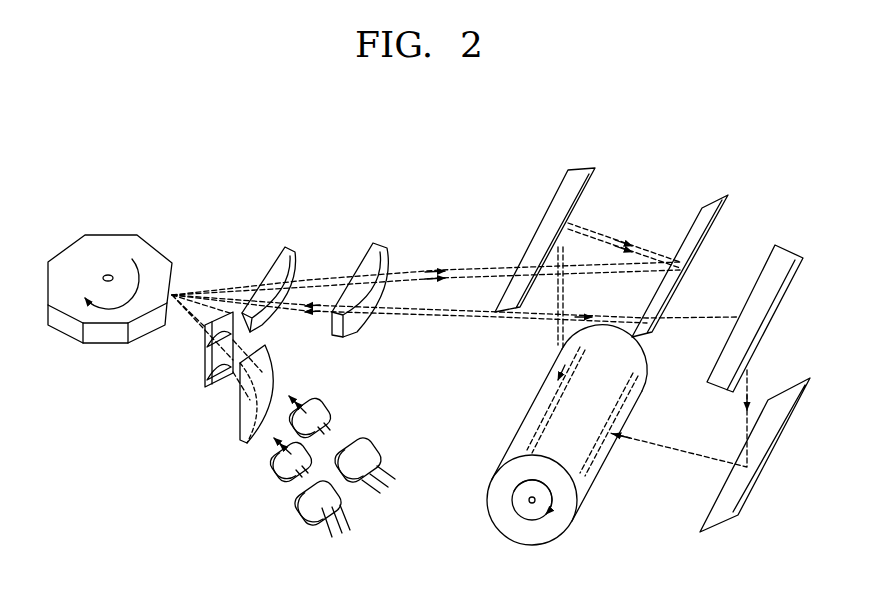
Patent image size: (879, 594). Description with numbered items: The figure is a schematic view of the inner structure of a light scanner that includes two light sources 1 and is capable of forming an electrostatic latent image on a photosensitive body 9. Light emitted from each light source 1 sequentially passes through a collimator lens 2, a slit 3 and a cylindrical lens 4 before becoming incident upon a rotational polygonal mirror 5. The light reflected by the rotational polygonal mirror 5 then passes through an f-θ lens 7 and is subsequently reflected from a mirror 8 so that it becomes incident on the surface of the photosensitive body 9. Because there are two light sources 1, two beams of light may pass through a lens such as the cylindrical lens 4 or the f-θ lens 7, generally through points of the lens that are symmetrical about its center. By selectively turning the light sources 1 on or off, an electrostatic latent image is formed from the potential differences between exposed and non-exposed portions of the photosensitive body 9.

The light source 1 is at (360, 483).
The collimator lens 2 is at (343, 448).
The slit 3 is at (202, 394).
The cylindrical lens 4 is at (236, 448).
The rotational polygonal mirror 5 is at (118, 242).
The f-θ lens 7 is at (375, 247).
The mirror 8 is at (723, 523).
The photosensitive body 9 is at (520, 533).